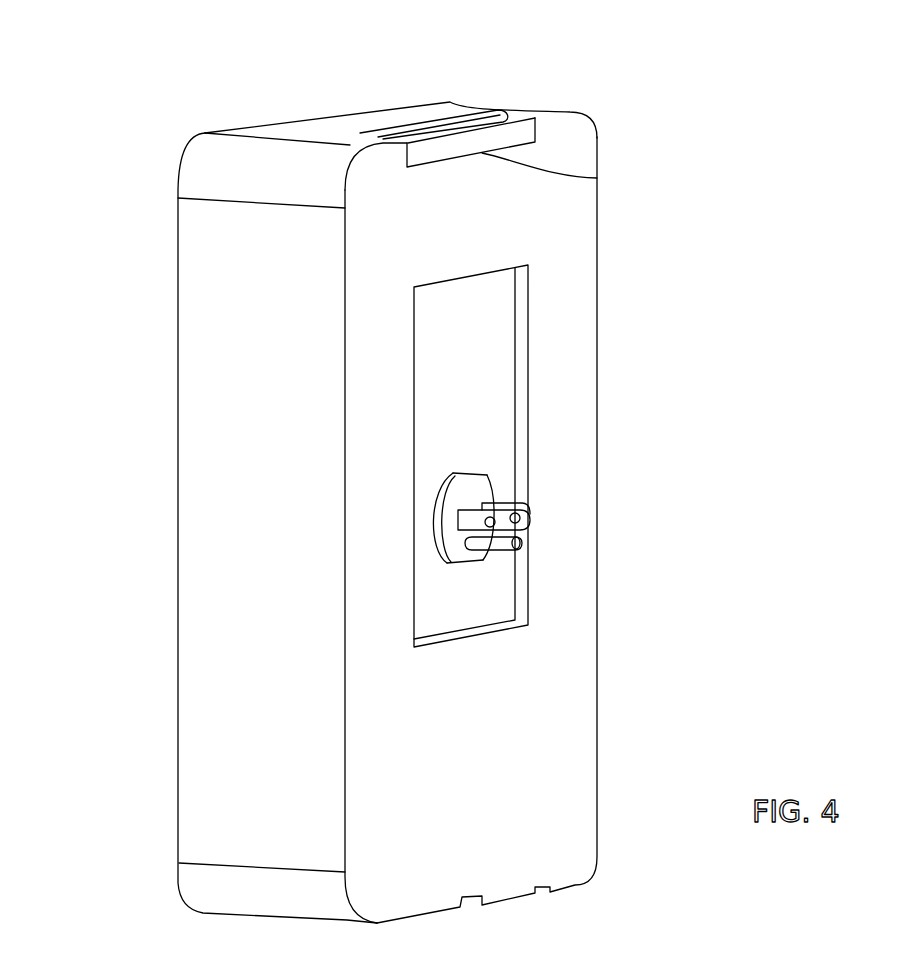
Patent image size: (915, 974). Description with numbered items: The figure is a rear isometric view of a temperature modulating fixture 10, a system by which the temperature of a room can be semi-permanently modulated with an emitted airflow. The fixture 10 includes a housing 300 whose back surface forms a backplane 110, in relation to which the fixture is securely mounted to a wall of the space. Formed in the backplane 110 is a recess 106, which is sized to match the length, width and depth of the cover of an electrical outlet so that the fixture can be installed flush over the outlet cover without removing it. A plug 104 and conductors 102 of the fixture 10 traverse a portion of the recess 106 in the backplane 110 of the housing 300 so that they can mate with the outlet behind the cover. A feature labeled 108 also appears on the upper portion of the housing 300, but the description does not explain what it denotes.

The temperature modulating fixture 10 is at (443, 477).
The conductors 102 is at (530, 547).
The plug 104 is at (453, 473).
The recess 106 is at (520, 285).
The top portion with slot 108 is at (600, 178).
The backplane 110 is at (575, 242).
The housing 300 is at (212, 482).